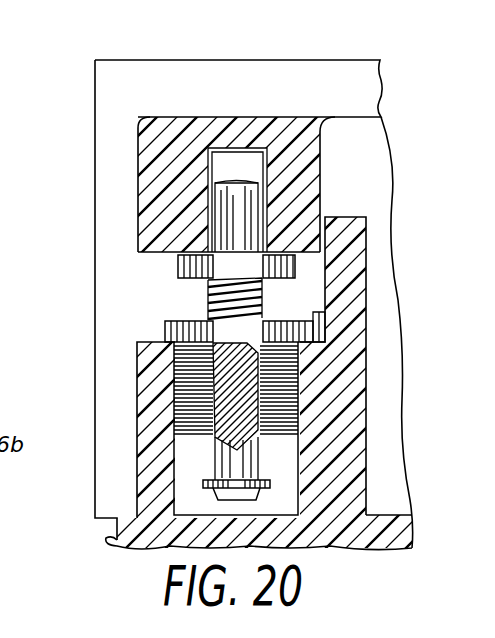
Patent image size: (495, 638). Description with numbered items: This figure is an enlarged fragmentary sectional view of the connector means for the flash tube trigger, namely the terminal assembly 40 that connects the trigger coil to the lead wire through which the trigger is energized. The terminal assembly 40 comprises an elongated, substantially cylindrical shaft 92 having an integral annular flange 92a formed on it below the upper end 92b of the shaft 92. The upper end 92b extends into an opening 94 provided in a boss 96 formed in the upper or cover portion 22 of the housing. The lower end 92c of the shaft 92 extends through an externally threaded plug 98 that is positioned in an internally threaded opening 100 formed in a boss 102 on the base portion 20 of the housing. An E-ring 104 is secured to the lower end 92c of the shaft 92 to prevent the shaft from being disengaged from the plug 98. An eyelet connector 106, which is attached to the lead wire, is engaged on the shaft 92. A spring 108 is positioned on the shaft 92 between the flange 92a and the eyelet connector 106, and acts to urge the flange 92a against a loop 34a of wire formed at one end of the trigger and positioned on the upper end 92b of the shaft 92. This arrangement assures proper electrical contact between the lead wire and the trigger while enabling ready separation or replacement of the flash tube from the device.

The cover portion 22 is at (317, 73).
The boss 96 is at (152, 149).
The opening 94 is at (270, 161).
The shaft 92 is at (268, 215).
The upper end of the shaft 92b is at (252, 184).
The annular flange 92a is at (316, 292).
The lower end of the shaft 92c is at (217, 455).
The loop of wire 34a is at (175, 259).
The terminal assembly 40 is at (153, 295).
The spring 108 is at (215, 305).
The eyelet connector 106 is at (325, 312).
The externally threaded plug 98 is at (178, 372).
The boss 102 is at (350, 390).
The internally threaded opening 100 is at (285, 474).
The E-ring 104 is at (290, 498).
The base portion 20 is at (367, 553).